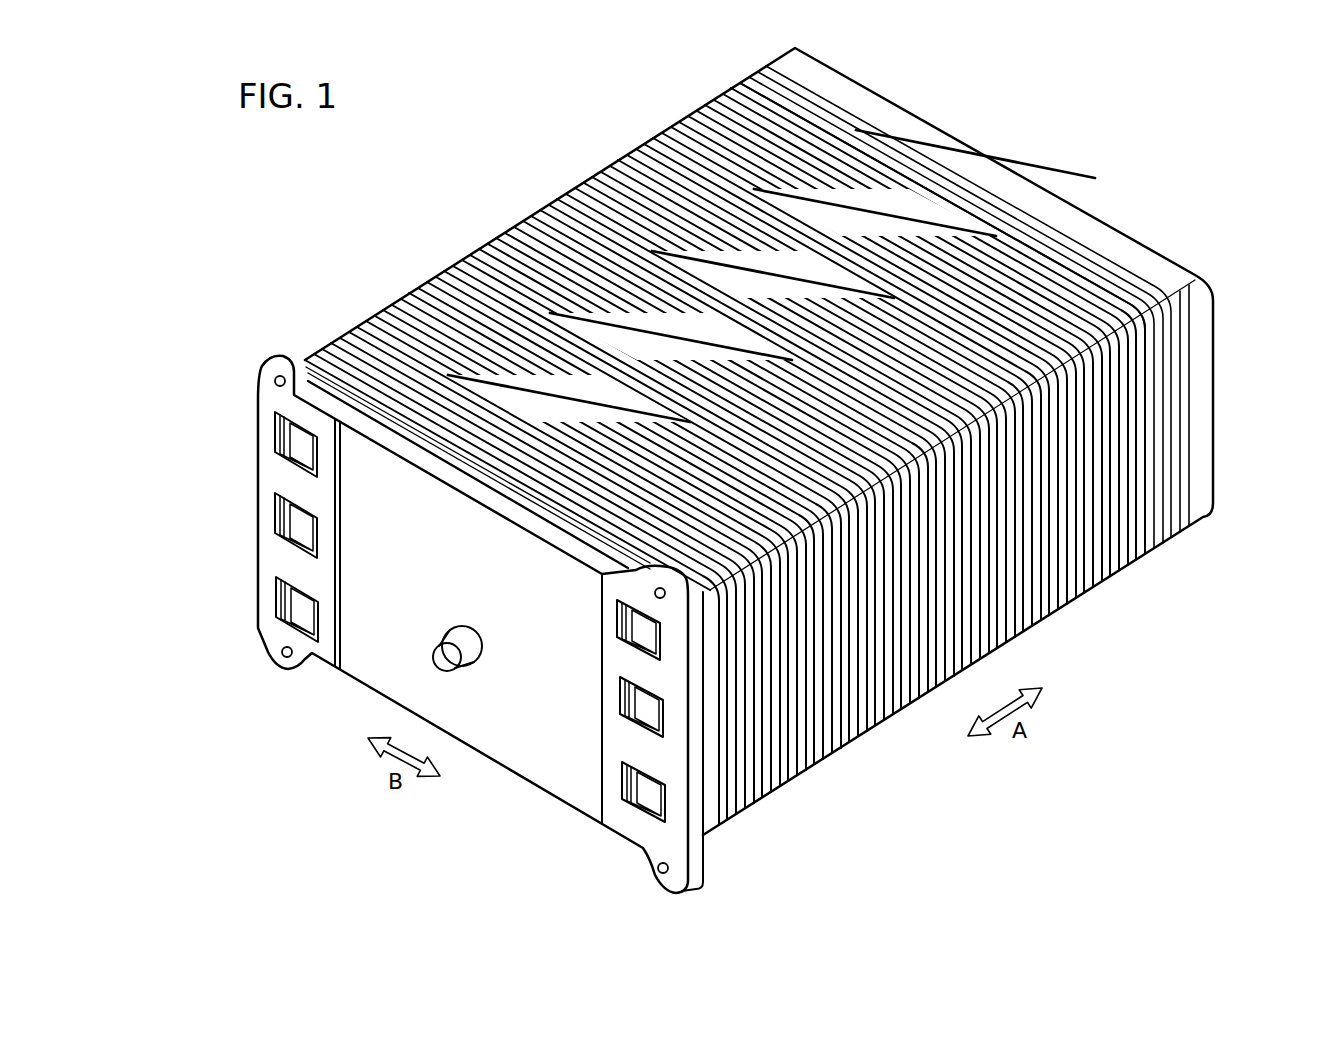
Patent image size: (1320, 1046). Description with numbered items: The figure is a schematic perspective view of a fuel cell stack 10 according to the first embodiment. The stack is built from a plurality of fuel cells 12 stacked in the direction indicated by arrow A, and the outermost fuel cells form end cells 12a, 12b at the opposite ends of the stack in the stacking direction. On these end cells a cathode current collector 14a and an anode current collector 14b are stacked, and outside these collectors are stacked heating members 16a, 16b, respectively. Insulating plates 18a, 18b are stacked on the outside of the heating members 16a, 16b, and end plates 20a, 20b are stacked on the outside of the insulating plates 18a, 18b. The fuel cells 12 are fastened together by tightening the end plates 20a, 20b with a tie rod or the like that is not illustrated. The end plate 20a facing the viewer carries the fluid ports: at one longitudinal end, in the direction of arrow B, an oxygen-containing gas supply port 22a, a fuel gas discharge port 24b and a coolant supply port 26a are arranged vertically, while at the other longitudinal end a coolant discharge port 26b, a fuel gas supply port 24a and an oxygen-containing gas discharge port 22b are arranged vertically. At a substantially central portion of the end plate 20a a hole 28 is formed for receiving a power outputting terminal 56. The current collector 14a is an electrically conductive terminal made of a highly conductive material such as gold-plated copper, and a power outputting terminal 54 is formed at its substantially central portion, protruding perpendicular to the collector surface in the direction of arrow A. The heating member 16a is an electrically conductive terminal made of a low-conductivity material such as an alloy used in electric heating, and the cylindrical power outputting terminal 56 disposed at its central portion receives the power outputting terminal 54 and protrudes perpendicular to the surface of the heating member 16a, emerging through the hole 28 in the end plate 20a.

The fuel cell stack 10 is at (233, 194).
The fuel cells 12 is at (495, 230).
The end cell 12a is at (330, 370).
The end cell 12b is at (1117, 286).
The cathode current collector 14a is at (473, 467).
The anode current collector 14b is at (1028, 225).
The heating member 16a is at (432, 452).
The heating member 16b is at (900, 148).
The insulating plate 18a is at (483, 508).
The insulating plate 18b is at (853, 112).
The end plate 20a is at (498, 738).
The end plate 20b is at (1018, 160).
The oxygen-containing gas supply port 22a is at (277, 440).
The oxygen-containing gas discharge port 22b is at (650, 790).
The fuel gas supply port 24a is at (640, 705).
The fuel gas discharge port 24b is at (283, 522).
The coolant supply port 26a is at (284, 606).
The coolant discharge port 26b is at (642, 620).
The hole 28 is at (488, 648).
The power outputting terminal 54 is at (452, 640).
The cylindrical power outputting terminal 56 is at (463, 632).